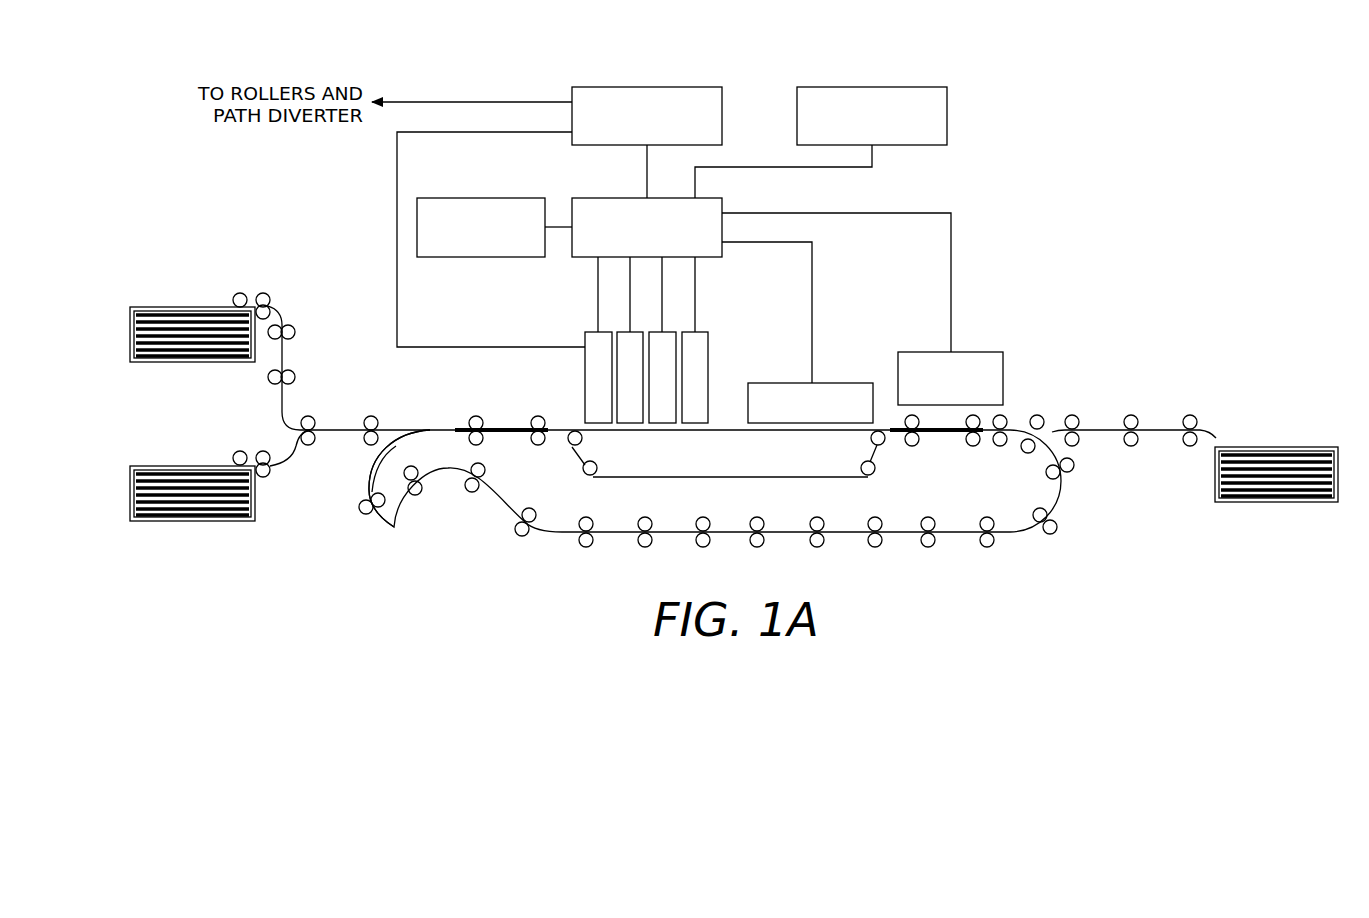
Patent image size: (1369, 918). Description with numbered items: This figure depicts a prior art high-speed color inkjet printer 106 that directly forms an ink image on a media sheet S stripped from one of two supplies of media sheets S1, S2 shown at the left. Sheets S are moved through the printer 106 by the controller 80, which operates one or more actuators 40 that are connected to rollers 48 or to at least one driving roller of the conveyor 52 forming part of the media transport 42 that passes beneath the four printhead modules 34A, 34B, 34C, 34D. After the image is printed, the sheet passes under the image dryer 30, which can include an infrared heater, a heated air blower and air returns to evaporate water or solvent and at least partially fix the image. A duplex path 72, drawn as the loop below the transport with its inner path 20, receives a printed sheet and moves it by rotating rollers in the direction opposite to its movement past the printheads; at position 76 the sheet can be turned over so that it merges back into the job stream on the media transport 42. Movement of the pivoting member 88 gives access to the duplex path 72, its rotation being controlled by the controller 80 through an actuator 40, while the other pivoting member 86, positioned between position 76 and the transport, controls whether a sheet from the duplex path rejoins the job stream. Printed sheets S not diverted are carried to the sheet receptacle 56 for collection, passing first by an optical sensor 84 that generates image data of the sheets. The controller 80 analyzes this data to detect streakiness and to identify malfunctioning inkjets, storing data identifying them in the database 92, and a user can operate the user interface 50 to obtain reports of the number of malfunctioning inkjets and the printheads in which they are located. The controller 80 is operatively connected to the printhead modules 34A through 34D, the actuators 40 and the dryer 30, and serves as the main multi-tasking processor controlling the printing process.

The media transport path 20 is at (657, 478).
The image dryer 30 is at (836, 383).
The printhead module 34A is at (585, 368).
The printhead module 34B is at (627, 331).
The printhead module 34C is at (668, 331).
The printhead module 34D is at (709, 360).
The actuators 40 is at (722, 118).
The media transport 42 is at (1041, 401).
The rollers 48 is at (291, 372).
The user interface 50 is at (485, 197).
The conveyor 52 is at (876, 486).
The sheet receptacle 56 is at (1276, 505).
The duplex path 72 is at (962, 544).
The position in the duplex path 76 is at (389, 533).
The controller 80 is at (600, 197).
The optical sensor 84 is at (985, 352).
The pivoting member 86 is at (418, 440).
The pivoting member 88 is at (1052, 436).
The database 92 is at (947, 116).
The high-speed color inkjet printer 106 is at (1006, 222).
The media sheet S is at (503, 428).
The supply of media sheets S1 is at (193, 305).
The supply of media sheets S2 is at (193, 465).